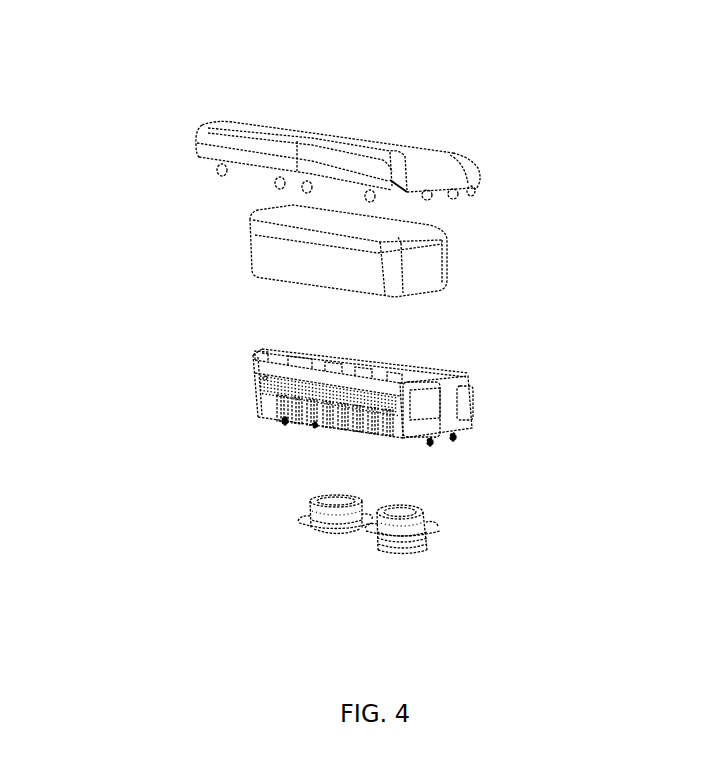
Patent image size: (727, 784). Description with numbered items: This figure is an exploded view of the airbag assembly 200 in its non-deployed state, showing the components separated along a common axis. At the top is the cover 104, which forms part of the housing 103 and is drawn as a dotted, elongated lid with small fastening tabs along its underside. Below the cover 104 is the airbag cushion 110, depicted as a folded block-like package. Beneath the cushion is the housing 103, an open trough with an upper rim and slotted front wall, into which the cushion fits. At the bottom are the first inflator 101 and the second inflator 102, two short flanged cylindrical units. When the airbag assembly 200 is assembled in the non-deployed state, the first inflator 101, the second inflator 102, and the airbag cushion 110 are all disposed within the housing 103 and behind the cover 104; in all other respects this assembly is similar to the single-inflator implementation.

The airbag assembly 200 is at (156, 92).
The cover 104 is at (442, 175).
The airbag cushion 110 is at (420, 266).
The housing 103 is at (452, 412).
The second inflator 102 is at (320, 520).
The first inflator 101 is at (420, 528).